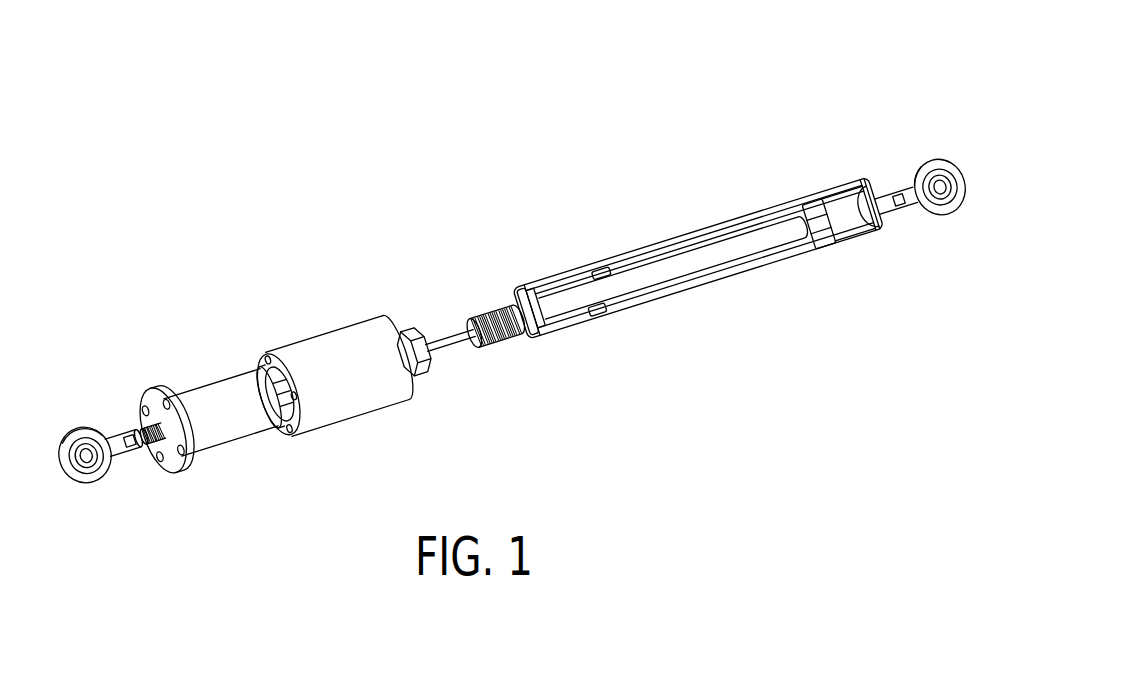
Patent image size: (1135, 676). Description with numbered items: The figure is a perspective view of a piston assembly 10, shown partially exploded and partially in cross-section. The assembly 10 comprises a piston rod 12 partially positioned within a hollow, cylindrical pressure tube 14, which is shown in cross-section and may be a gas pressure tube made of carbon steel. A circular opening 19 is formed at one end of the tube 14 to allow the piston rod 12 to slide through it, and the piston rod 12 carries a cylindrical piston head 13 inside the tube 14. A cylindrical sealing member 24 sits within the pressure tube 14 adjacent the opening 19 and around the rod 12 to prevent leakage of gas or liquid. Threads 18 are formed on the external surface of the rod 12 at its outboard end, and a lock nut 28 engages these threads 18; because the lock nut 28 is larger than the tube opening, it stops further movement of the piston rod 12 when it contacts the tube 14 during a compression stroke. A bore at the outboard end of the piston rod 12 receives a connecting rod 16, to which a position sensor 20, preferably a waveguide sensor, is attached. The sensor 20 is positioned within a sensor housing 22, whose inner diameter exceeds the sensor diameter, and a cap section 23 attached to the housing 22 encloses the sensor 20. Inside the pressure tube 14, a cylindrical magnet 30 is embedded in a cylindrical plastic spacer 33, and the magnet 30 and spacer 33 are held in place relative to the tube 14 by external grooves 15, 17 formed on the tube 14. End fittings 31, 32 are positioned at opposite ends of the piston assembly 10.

The piston assembly 10 is at (151, 57).
The piston rod 12 is at (698, 280).
The piston head 13 is at (686, 219).
The pressure tube 14 is at (850, 268).
The external groove 15 is at (699, 224).
The connecting rod 16 is at (456, 389).
The external groove 17 is at (694, 220).
The threads 18 is at (495, 271).
The circular opening 19 is at (509, 230).
The position sensor 20 is at (224, 367).
The sensor housing 22 is at (333, 336).
The cap section 23 is at (165, 385).
The sealing member 24 is at (547, 254).
The lock nut 28 is at (415, 300).
The magnet 30 is at (610, 350).
The end fitting 31 is at (96, 411).
The end fitting 32 is at (901, 153).
The plastic spacer 33 is at (629, 232).